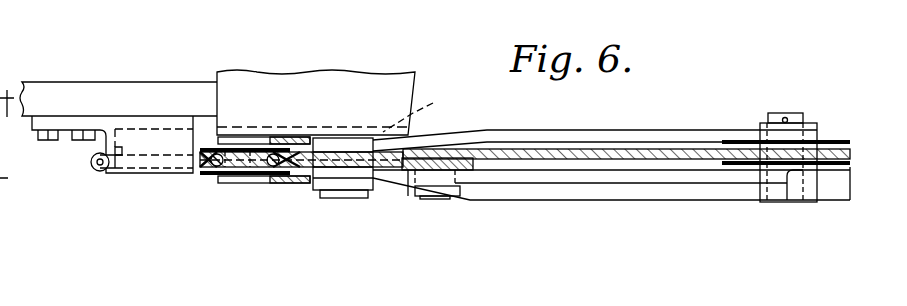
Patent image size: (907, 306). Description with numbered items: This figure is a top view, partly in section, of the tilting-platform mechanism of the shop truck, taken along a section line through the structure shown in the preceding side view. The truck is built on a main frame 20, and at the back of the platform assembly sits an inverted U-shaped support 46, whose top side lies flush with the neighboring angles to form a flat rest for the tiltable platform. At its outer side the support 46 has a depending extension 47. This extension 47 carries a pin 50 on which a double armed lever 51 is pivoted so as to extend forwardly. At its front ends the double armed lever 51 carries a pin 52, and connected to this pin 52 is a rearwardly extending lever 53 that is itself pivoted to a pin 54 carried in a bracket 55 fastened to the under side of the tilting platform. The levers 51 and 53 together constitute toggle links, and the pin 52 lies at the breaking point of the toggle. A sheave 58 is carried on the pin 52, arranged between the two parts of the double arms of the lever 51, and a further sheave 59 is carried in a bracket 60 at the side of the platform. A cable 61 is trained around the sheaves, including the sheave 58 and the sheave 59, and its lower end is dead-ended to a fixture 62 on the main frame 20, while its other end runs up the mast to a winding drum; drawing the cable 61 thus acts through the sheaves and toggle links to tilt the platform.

The main frame 20 is at (135, 92).
The inverted U-shaped support 46 is at (300, 73).
The depending extension 47 is at (466, 107).
The pin 50 is at (340, 193).
The double armed lever 51 is at (633, 193).
The pin 52 is at (770, 200).
The rearwardly extending lever 53 is at (543, 175).
The pin 54 is at (425, 195).
The bracket 55 is at (408, 192).
The sheave 58 is at (843, 143).
The sheave 59 is at (215, 176).
The bracket 60 is at (265, 178).
The cable 61 is at (680, 155).
The fixture 62 is at (157, 145).